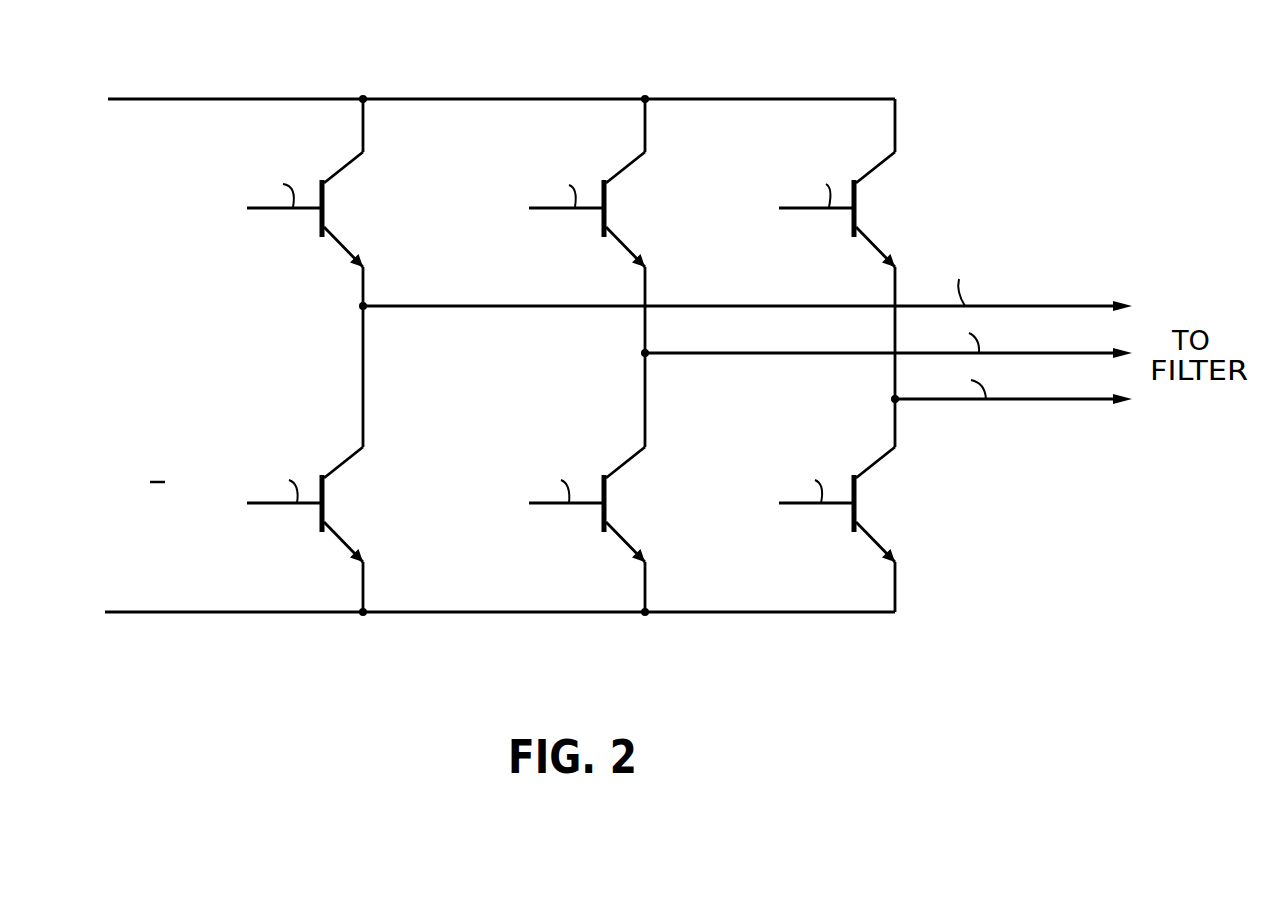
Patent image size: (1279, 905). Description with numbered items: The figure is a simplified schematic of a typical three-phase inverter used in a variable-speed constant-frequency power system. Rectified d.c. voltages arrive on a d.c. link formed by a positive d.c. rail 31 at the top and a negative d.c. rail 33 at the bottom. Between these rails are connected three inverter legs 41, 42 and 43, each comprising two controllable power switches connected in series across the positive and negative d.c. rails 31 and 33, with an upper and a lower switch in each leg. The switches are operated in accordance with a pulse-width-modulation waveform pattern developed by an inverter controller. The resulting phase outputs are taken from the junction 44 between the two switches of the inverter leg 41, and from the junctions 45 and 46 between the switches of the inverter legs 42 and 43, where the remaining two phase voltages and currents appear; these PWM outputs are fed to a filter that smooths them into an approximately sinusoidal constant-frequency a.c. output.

The positive d.c. rail 31 is at (223, 100).
The negative d.c. rail 33 is at (330, 612).
The inverter leg 41 is at (317, 343).
The inverter leg 42 is at (509, 389).
The inverter leg 43 is at (787, 418).
The junction 44 is at (367, 304).
The junction 45 is at (650, 351).
The junction 46 is at (897, 401).